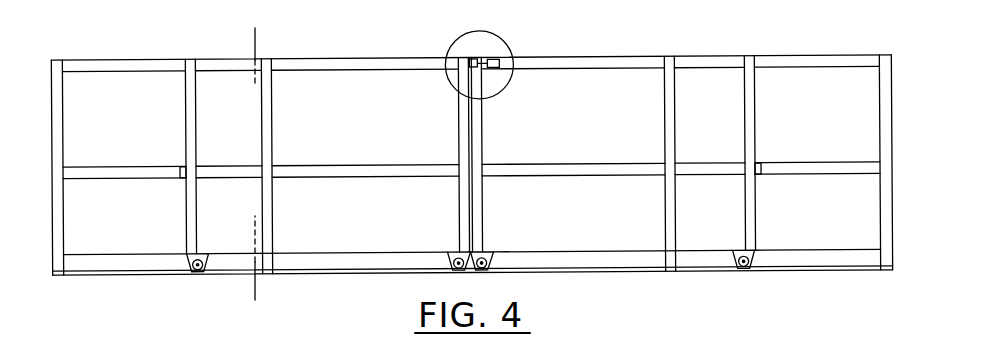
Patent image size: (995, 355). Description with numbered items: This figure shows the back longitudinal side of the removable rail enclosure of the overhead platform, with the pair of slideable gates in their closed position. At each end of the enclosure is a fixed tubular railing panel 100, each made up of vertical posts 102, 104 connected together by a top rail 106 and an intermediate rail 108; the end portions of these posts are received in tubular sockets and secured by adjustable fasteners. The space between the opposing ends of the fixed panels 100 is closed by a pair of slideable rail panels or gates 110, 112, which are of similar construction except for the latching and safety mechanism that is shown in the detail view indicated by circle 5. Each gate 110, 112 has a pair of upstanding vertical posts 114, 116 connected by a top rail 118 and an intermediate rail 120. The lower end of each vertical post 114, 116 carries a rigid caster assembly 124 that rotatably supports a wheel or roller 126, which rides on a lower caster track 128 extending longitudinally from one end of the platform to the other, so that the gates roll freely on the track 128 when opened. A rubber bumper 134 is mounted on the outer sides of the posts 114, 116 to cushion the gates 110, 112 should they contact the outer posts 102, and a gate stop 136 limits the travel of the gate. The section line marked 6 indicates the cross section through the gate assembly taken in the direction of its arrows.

The tubular railing panel 100 is at (46, 82).
The vertical post 102 is at (62, 118).
The vertical post 104 is at (272, 112).
The top rail 106 is at (89, 60).
The intermediate rail 108 is at (115, 167).
The slideable rail panel 110 is at (186, 89).
The slideable rail panel 112 is at (755, 88).
The vertical post 114 is at (482, 201).
The vertical post 116 is at (459, 201).
The top rail 118 is at (357, 61).
The intermediate rail 120 is at (341, 167).
The rigid caster assembly 124 is at (189, 263).
The rotatable wheel 126 is at (493, 263).
The lower caster track 128 is at (101, 275).
The rubber bumper 134 is at (760, 166).
The gate stop 136 is at (182, 171).
The detail view circle for FIG. 5 is at (504, 40).
The section line 6- 6 is at (255, 37).